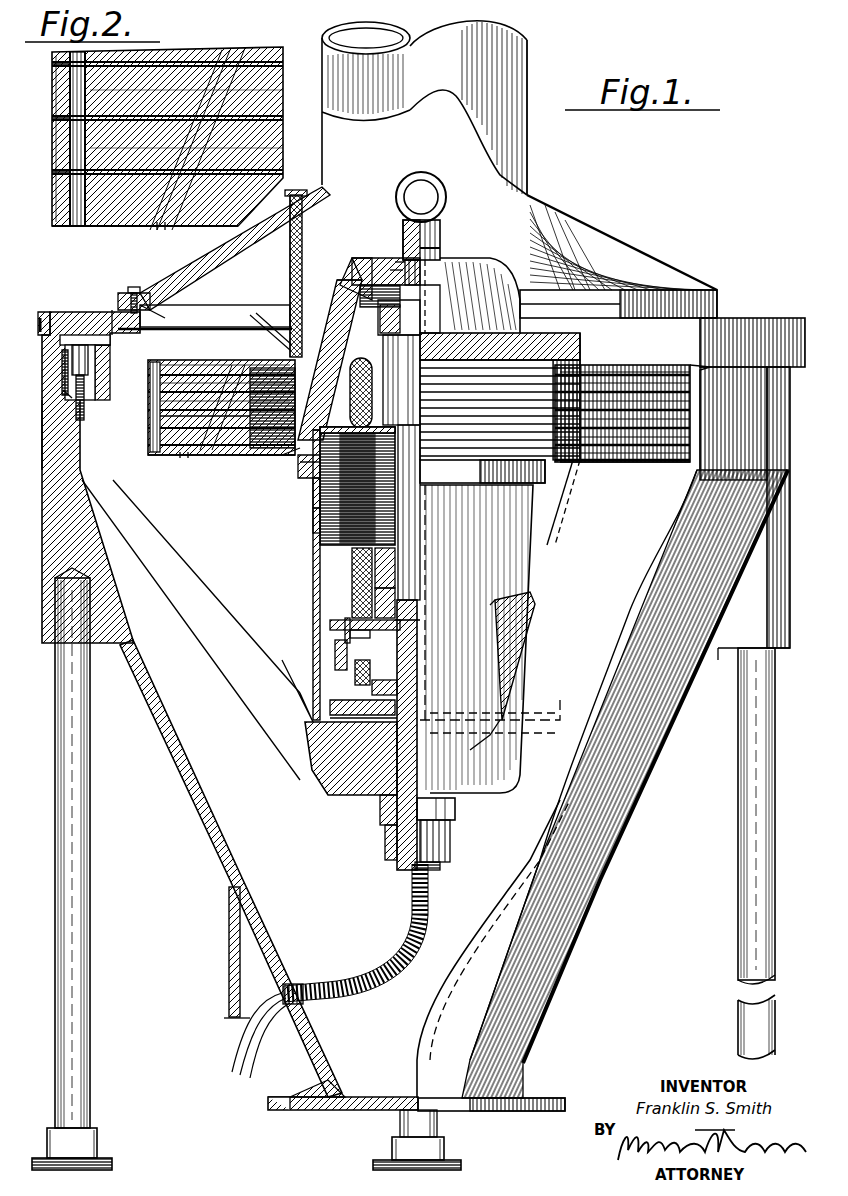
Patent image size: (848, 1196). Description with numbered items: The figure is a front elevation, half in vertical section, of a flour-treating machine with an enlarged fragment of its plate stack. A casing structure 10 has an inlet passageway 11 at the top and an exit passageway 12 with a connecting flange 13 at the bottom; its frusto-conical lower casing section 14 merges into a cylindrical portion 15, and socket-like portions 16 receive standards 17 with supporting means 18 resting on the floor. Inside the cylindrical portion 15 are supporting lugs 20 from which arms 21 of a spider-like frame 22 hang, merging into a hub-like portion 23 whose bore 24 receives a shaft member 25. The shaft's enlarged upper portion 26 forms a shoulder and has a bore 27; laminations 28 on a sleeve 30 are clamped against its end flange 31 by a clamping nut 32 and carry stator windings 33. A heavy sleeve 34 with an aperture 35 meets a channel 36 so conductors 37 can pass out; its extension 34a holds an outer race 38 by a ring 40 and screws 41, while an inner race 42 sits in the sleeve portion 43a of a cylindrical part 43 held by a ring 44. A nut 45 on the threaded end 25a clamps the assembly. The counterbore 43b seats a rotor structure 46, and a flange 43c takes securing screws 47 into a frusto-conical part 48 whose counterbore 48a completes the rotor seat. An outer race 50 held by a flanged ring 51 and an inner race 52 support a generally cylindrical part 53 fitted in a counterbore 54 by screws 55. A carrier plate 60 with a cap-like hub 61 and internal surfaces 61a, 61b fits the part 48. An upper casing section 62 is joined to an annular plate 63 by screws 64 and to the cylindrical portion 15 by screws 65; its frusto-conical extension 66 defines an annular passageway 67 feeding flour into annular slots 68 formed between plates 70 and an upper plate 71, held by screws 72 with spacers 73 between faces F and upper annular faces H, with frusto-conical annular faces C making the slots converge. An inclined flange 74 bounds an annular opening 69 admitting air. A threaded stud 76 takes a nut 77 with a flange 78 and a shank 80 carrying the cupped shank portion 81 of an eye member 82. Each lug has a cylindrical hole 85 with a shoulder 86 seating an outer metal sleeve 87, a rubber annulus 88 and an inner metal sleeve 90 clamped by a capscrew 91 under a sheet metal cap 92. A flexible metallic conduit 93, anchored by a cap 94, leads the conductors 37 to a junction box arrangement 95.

In FIG. 1, the casing structure 10 is at (752, 320).
In FIG. 1, the inlet passageway 11 is at (530, 64).
In FIG. 1, the exit passageway 12 is at (352, 1110).
In FIG. 1, the flange 13 is at (545, 1096).
In FIG. 1, the lower casing section 14 is at (630, 815).
In FIG. 1, the cylindrical portion 15 is at (792, 405).
In FIG. 1, the socket-like portions 16 is at (103, 645).
In FIG. 1, the standards 17 is at (90, 840).
In FIG. 1, the supporting means 18 is at (100, 1150).
In FIG. 1, the supporting lugs 20 is at (162, 366).
In FIG. 1, the arms 21 is at (200, 632).
In FIG. 1, the spider-like frame 22 is at (330, 800).
In FIG. 1, the hub-like portion 23 is at (455, 770).
In FIG. 1, the bore 24 is at (410, 672).
In FIG. 1, the shaft member 25 is at (395, 800).
In FIG. 1, the threaded end 25a is at (398, 850).
In FIG. 1, the upper shaft portion 26 is at (415, 405).
In FIG. 1, the bore 27 is at (430, 380).
In FIG. 1, the laminations 28 is at (396, 535).
In FIG. 1, the sleeve 30 is at (396, 516).
In FIG. 1, the end flange 31 is at (395, 410).
In FIG. 1, the clamping nut 32 is at (402, 560).
In FIG. 1, the stator windings 33 is at (352, 580).
In FIG. 1, the sleeve 34 is at (400, 578).
In FIG. 1, the sleeve extension 34a is at (345, 655).
In FIG. 1, the aperture 35 is at (400, 598).
In FIG. 1, the channel 36 is at (418, 642).
In FIG. 1, the conductors 37 is at (420, 620).
In FIG. 1, the outer race 38 is at (355, 676).
In FIG. 1, the ring 40 is at (345, 695).
In FIG. 1, the screws 41 is at (345, 628).
In FIG. 1, the inner race 42 is at (385, 692).
In FIG. 1, the cylindrical part 43 is at (313, 556).
In FIG. 1, the sleeve portion 43a is at (385, 704).
In FIG. 1, the counterbore 43b is at (320, 528).
In FIG. 1, the flange 43c is at (310, 472).
In FIG. 1, the ring 44 is at (350, 635).
In FIG. 1, the nut 45 is at (452, 815).
In FIG. 1, the rotor structure 46 is at (320, 503).
In FIG. 1, the securing screws 47 is at (300, 480).
In FIG. 1, the frusto-conical part 48 is at (345, 300).
In FIG. 1, the counterbore 48a is at (280, 462).
In FIG. 1, the outer race 50 is at (382, 345).
In FIG. 1, the flanged ring 51 is at (338, 305).
In FIG. 1, the inner race 52 is at (385, 365).
In FIG. 1, the generally cylindrical part 53 is at (420, 320).
In FIG. 1, the counterbore 54 is at (355, 300).
In FIG. 1, the screws 55 is at (370, 280).
In FIG. 2, the carrier plate 60 is at (196, 226).
In FIG. 1, the carrier plate 60 is at (205, 458).
In FIG. 1, the cap-like hub 61 is at (308, 325).
In FIG. 1, the internal surface 61a is at (222, 458).
In FIG. 1, the internal surface 61b is at (348, 288).
In FIG. 1, the upper casing section 62 is at (634, 257).
In FIG. 1, the annular plate 63 is at (72, 311).
In FIG. 1, the screws 64 is at (134, 290).
In FIG. 1, the screws 65 is at (45, 311).
In FIG. 1, the frusto-conical extension 66 is at (300, 272).
In FIG. 1, the annular passageway 67 is at (292, 300).
In FIG. 2, the annular slots 68 is at (297, 175).
In FIG. 1, the annular slots 68 is at (605, 462).
In FIG. 1, the annular opening 69 is at (262, 345).
In FIG. 2, the plates 70 is at (297, 148).
In FIG. 1, the plates 70 is at (226, 378).
In FIG. 1, the upper plate 71 is at (182, 378).
In FIG. 2, the screws 72 is at (72, 88).
In FIG. 1, the screws 72 is at (150, 438).
In FIG. 2, the spacers 73 is at (70, 175).
In FIG. 1, the spacers 73 is at (150, 416).
In FIG. 1, the inclined flange 74 is at (248, 338).
In FIG. 1, the threaded stud 76 is at (421, 272).
In FIG. 1, the nut 77 is at (398, 262).
In FIG. 1, the flange 78 is at (392, 270).
In FIG. 1, the shank 80 is at (441, 255).
In FIG. 1, the cupped shank portion 81 is at (441, 238).
In FIG. 1, the eye member 82 is at (447, 197).
In FIG. 1, the cylindrical hole 85 is at (108, 340).
In FIG. 1, the shoulder 86 is at (106, 383).
In FIG. 1, the outer metal sleeve 87 is at (52, 430).
In FIG. 1, the rubber annulus 88 is at (63, 388).
In FIG. 1, the inner metal sleeve 90 is at (62, 376).
In FIG. 1, the capscrew 91 is at (82, 338).
In FIG. 1, the sheet metal cap 92 is at (112, 310).
In FIG. 1, the flexible metallic conduit 93 is at (410, 945).
In FIG. 1, the cap 94 is at (445, 845).
In FIG. 1, the junction box arrangement 95 is at (226, 1006).
In FIG. 2, the frusto-conical annular faces C is at (240, 60).
In FIG. 1, the frusto-conical annular faces C is at (243, 380).
In FIG. 2, the annular faces F is at (62, 150).
In FIG. 1, the annular faces F is at (150, 410).
In FIG. 2, the upper annular faces H is at (168, 226).
In FIG. 1, the upper annular faces H is at (188, 456).